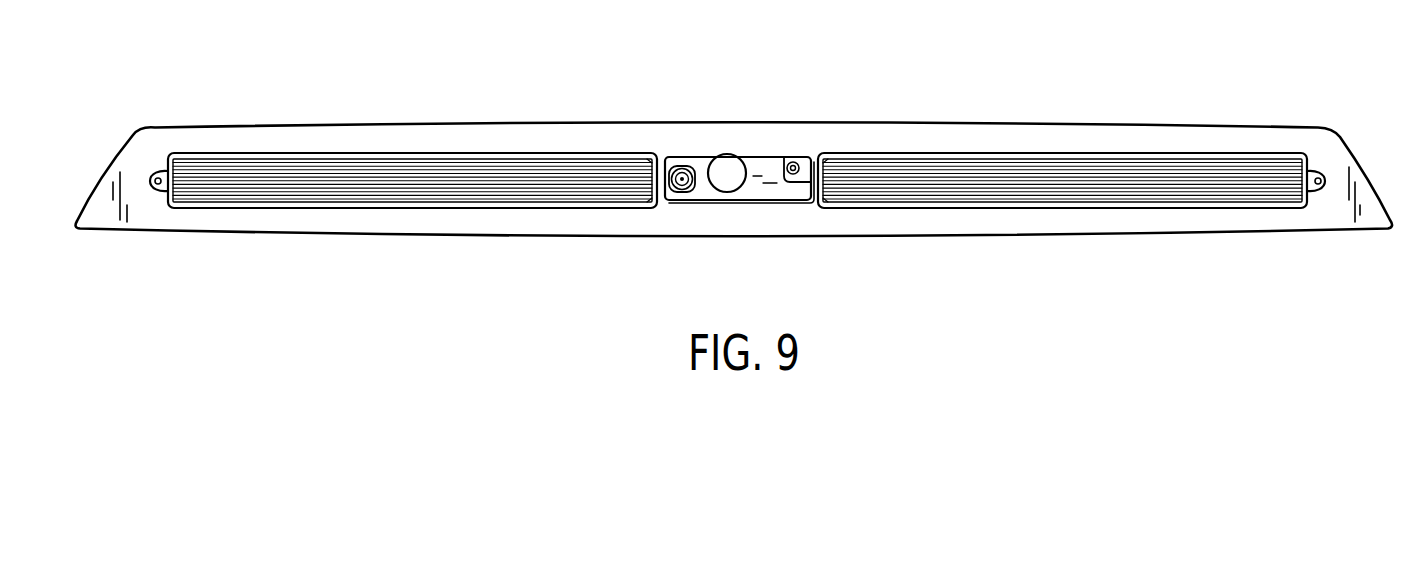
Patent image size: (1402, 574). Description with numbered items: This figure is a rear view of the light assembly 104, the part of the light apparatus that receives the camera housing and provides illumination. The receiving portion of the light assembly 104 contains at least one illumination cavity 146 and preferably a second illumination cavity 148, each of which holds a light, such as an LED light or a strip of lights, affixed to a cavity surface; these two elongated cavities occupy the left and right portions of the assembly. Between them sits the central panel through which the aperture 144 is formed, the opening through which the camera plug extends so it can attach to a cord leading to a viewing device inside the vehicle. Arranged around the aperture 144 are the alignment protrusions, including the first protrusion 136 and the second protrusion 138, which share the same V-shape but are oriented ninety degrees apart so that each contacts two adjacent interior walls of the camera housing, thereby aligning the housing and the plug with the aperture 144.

The light assembly 104 is at (447, 140).
The first protrusion 136 is at (794, 162).
The second protrusion 138 is at (682, 168).
The aperture 144 is at (727, 173).
The illumination cavity 146 is at (613, 180).
The second illumination cavity 148 is at (862, 180).